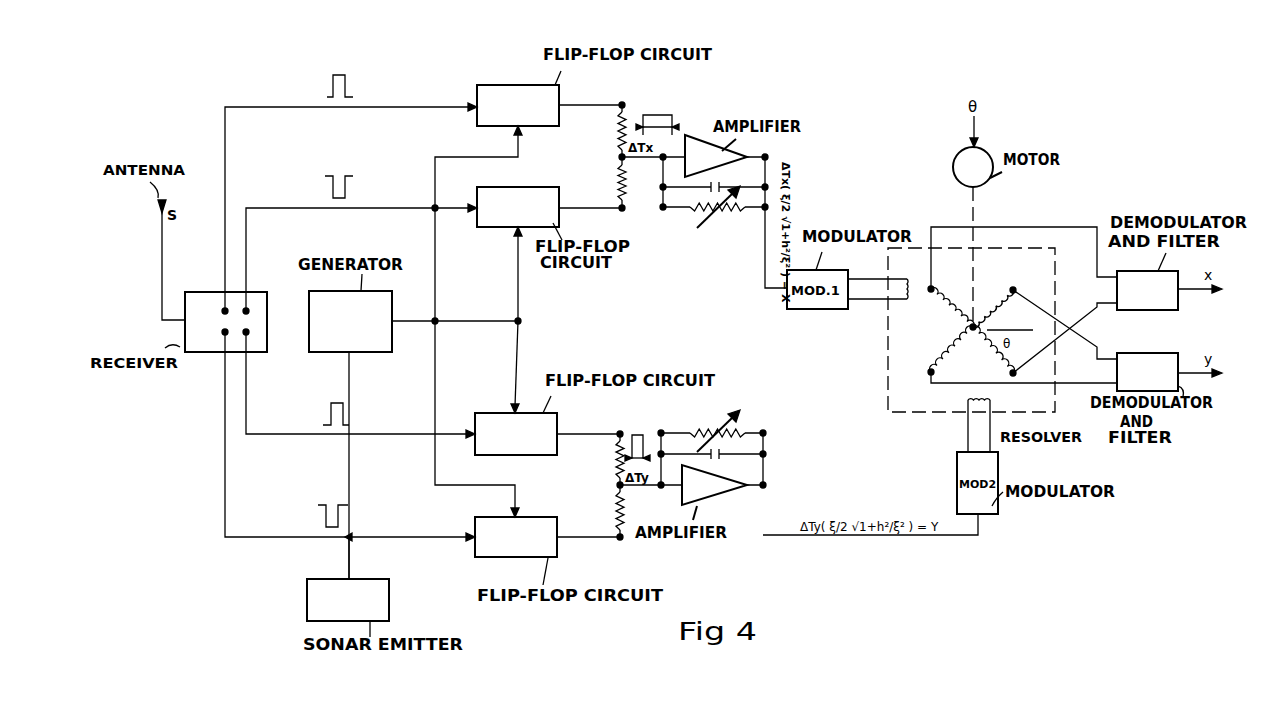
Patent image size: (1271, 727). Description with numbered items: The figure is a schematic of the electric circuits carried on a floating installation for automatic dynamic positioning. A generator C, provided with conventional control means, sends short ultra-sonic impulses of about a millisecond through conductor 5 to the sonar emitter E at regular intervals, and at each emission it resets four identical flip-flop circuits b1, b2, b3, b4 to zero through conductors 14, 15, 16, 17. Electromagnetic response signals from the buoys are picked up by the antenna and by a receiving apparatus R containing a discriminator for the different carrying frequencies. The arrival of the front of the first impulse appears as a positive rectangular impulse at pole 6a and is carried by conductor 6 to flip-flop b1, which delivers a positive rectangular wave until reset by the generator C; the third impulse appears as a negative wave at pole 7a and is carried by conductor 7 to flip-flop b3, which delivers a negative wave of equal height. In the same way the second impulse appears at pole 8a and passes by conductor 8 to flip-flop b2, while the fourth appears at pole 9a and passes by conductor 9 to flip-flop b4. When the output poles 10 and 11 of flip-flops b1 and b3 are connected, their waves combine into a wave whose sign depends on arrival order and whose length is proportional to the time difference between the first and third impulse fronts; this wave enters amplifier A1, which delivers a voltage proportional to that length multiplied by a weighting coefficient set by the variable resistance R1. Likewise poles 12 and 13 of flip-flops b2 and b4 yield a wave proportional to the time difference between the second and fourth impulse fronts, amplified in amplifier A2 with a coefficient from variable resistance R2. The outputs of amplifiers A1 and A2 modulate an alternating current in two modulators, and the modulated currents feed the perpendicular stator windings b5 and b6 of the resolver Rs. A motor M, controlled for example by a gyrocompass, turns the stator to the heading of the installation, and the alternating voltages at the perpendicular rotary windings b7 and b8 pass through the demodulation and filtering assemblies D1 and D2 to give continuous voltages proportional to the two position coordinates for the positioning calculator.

The conductor 5 is at (349, 562).
The conductor 6 is at (276, 107).
The conductor 7 is at (276, 208).
The conductor 8 is at (278, 434).
The conductor 9 is at (265, 537).
The pole 6a is at (223, 308).
The pole 7a is at (248, 308).
The pole 8a is at (248, 336).
The pole 9a is at (224, 336).
The pole 10 is at (562, 105).
The pole 11 is at (562, 208).
The pole 12 is at (560, 434).
The pole 13 is at (560, 537).
The conductor 14 is at (435, 266).
The conductor 15 is at (515, 385).
The conductor 16 is at (506, 274).
The conductor 17 is at (435, 364).
The flip-flop circuit b1 is at (515, 94).
The flip-flop circuit b2 is at (514, 440).
The flip-flop circuit b3 is at (515, 197).
The flip-flop circuit b4 is at (514, 545).
The stator winding b5 is at (904, 279).
The stator winding b6 is at (992, 423).
The rotary winding b7 is at (953, 302).
The rotary winding b8 is at (958, 362).
The amplifier A1 is at (716, 156).
The amplifier A2 is at (714, 485).
The variable resistance R1 is at (714, 214).
The variable resistance R2 is at (712, 427).
The resolver Rs is at (1040, 409).
The receiving apparatus R is at (226, 322).
The generator C is at (350, 321).
The sonar emitter E is at (348, 600).
The motor M is at (973, 167).
The demodulation and filtering assembly D1 is at (1147, 290).
The demodulation and filtering assembly D2 is at (1147, 372).